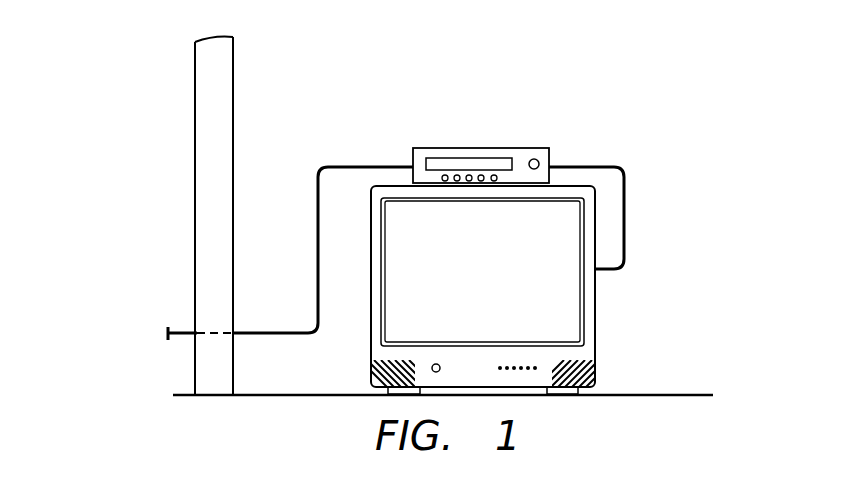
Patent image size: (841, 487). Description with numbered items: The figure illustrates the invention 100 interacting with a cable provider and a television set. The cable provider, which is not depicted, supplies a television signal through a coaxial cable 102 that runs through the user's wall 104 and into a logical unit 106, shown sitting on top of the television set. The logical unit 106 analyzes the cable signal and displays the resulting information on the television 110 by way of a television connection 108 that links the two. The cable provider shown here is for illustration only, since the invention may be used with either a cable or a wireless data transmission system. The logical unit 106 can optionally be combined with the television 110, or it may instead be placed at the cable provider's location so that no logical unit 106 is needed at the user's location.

The invention 100 is at (118, 98).
The coaxial cable 102 is at (366, 167).
The wall 104 is at (195, 204).
The logical unit 106 is at (483, 147).
The television connection 108 is at (624, 218).
The television 110 is at (596, 320).